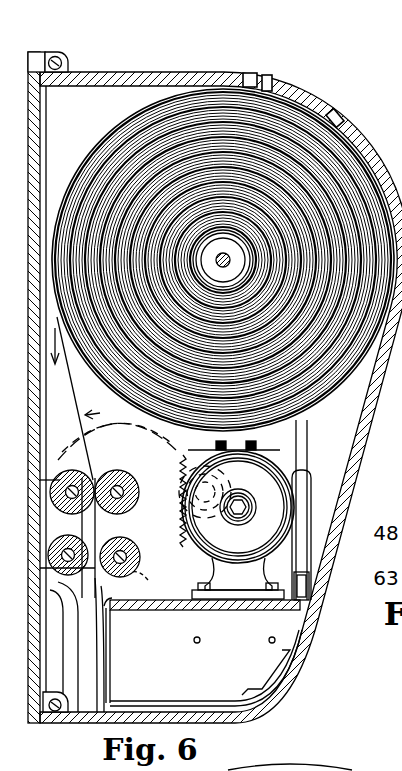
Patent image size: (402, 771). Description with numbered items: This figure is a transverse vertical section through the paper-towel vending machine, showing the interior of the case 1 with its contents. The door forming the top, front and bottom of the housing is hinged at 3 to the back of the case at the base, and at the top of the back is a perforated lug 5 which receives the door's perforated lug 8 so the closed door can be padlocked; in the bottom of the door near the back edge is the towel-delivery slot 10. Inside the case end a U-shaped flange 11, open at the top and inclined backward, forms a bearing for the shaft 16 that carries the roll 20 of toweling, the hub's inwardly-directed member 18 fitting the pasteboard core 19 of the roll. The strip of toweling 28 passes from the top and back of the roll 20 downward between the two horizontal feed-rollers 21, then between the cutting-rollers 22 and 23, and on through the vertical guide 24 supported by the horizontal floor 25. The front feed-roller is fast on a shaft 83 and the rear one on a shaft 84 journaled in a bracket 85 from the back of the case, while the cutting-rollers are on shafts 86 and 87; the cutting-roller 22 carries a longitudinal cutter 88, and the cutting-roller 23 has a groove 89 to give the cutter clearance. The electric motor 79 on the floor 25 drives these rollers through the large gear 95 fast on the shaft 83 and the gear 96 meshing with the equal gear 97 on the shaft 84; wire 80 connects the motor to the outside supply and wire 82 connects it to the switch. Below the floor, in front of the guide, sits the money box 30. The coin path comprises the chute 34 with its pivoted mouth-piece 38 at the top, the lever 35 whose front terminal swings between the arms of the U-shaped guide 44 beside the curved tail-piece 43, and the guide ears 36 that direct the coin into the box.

The case 1 is at (215, 387).
The hinge 3 is at (55, 712).
The perforated lugs 5 is at (40, 56).
The perforated lug 8 is at (62, 63).
The towel-delivery slot 10 is at (96, 724).
The U-shaped flange 11 is at (250, 80).
The shaft 16 is at (230, 258).
The inwardly-directed members 18 is at (210, 282).
The pasteboard core 19 is at (219, 226).
The roll 20 is at (281, 304).
The feed-rollers 21 is at (117, 476).
The cutting-roller 22 is at (138, 550).
The cutting-roller 23 is at (86, 545).
The vertical guide 24 is at (90, 665).
The horizontal floor 25 is at (78, 640).
The strip of toweling 28 is at (74, 389).
The money box 30 is at (204, 653).
The chute 34 is at (308, 452).
The lever 35 is at (222, 754).
The guide ears 36 is at (300, 590).
The mouth-piece 38 is at (338, 118).
The tail-piece 43 is at (303, 518).
The U-shaped guide 44 is at (311, 541).
The electric motor 79 is at (228, 494).
The wire 80 is at (212, 450).
The wire 82 is at (262, 450).
The shaft 83 is at (182, 474).
The shaft 84 is at (72, 476).
The bracket 85 is at (120, 628).
The shaft 86 is at (142, 562).
The shaft 87 is at (126, 546).
The cutter 88 is at (152, 583).
The longitudinal groove 89 is at (90, 580).
The large gear 95 is at (117, 435).
The gear 96 is at (140, 494).
The gear 97 is at (70, 462).